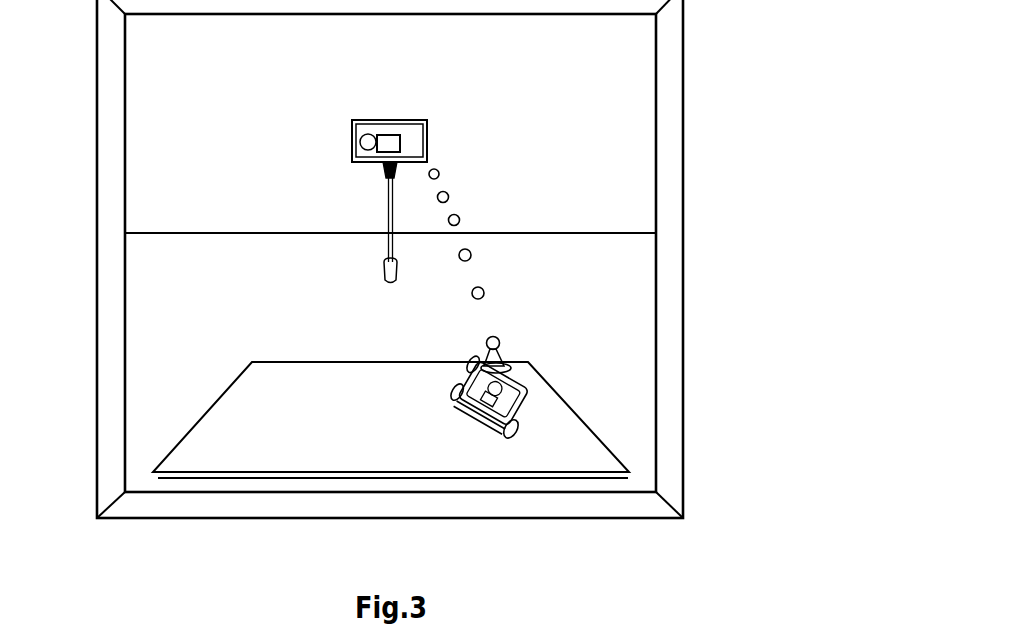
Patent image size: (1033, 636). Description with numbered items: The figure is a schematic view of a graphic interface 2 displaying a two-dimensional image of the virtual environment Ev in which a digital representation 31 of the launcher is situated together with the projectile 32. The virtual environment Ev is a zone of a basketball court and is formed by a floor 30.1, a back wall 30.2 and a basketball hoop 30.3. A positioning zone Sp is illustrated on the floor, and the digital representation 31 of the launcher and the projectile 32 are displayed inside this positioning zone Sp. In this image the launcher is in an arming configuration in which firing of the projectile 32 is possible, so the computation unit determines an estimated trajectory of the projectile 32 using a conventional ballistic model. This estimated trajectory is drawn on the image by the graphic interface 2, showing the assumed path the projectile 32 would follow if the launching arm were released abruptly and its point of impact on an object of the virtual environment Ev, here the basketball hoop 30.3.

The graphic interface 2 is at (697, 252).
The virtual environment Ev is at (670, 103).
The floor 30.1 is at (133, 353).
The back wall 30.2 is at (133, 145).
The basketball hoop 30.3 is at (366, 198).
The digital representation of the launcher 31 is at (566, 409).
The projectile 32 is at (530, 353).
The positioning zone Sp is at (401, 432).